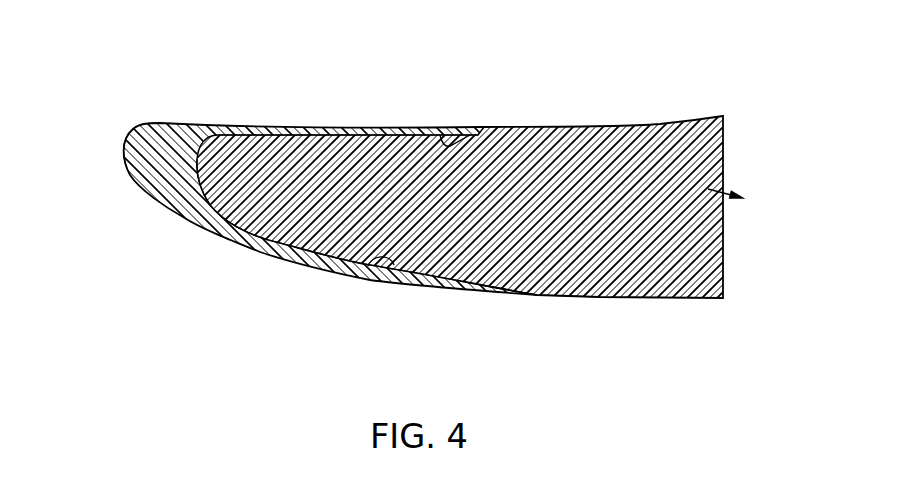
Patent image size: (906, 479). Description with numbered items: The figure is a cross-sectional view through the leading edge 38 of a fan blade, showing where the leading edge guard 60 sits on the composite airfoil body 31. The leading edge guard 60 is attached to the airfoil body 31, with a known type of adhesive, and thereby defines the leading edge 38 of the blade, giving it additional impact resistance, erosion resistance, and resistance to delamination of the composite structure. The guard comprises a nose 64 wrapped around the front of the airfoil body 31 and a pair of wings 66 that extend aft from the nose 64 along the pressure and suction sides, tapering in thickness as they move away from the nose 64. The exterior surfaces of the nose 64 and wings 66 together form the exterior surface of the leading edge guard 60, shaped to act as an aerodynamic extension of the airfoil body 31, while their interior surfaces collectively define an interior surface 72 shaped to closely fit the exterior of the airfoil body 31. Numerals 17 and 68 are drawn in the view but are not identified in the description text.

The airfoil body 17 is at (644, 224).
The airfoil body 31 is at (508, 195).
The leading edge 38 is at (126, 151).
The leading edge guard 60 is at (163, 240).
The nose 64 is at (158, 123).
The wings 66 is at (348, 128).
The trailing end of sheath 68 is at (535, 297).
The interior surface 72 is at (458, 135).